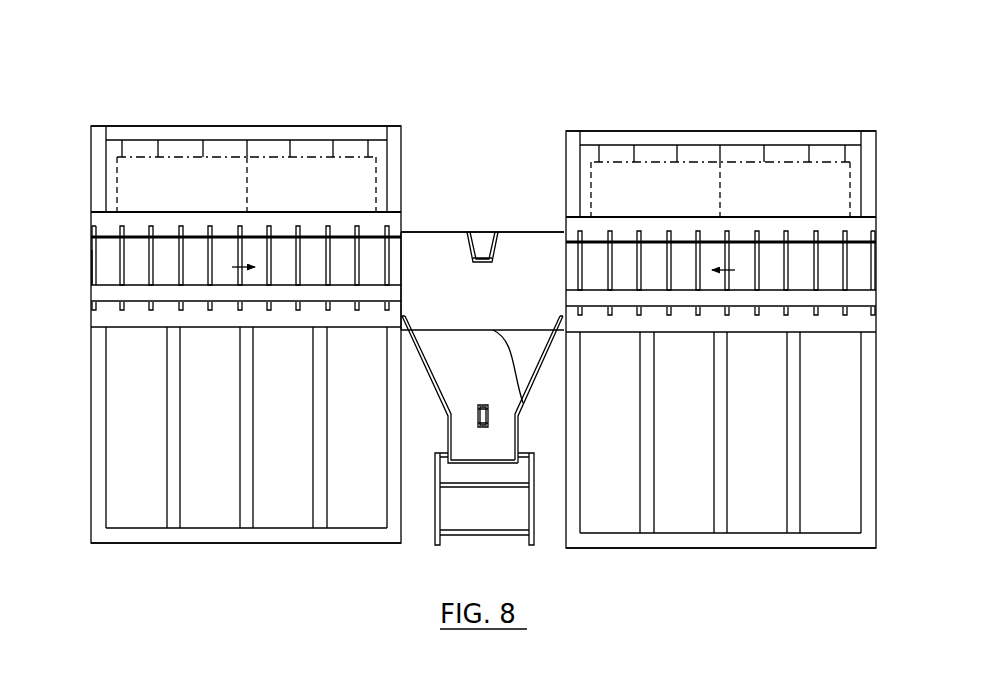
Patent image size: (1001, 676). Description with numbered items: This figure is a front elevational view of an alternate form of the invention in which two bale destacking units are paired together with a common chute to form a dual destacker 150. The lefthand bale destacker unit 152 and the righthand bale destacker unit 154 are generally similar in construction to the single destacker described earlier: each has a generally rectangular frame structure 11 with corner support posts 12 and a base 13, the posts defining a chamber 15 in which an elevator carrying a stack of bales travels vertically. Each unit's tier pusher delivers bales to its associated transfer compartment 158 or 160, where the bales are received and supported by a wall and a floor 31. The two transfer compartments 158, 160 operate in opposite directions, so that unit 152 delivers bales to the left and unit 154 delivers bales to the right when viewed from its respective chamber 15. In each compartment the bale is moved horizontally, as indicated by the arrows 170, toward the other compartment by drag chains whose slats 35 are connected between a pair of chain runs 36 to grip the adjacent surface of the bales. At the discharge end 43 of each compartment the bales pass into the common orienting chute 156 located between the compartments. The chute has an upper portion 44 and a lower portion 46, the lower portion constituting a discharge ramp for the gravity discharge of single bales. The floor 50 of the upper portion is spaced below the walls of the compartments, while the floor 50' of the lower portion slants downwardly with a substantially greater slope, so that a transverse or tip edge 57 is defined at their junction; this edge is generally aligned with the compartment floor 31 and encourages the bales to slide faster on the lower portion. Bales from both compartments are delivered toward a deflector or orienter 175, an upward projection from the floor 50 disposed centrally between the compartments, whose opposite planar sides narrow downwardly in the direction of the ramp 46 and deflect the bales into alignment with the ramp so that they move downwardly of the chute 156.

The frame structure 11 is at (90, 136).
The corner support posts 12 is at (90, 402).
The base 13 is at (250, 544).
The chamber 15 is at (292, 428).
The floor 31 is at (860, 220).
The slats 35 is at (850, 282).
The chain runs 36 is at (860, 244).
The discharge end 43 is at (352, 275).
The upper portion 44 is at (445, 257).
The lower portion 46 is at (459, 397).
The floor 50 is at (481, 294).
The floor 50' is at (481, 392).
The transverse or tip edge 57 is at (522, 405).
The dual destacker 150 is at (477, 146).
The bale destacker unit 152 is at (239, 137).
The bale destacker unit 154 is at (754, 128).
The common orienting chute 156 is at (528, 230).
The transfer compartment 158 is at (108, 266).
The transfer compartment 160 is at (833, 264).
The arrows 170 is at (246, 262).
The deflector or orienter 175 is at (482, 237).